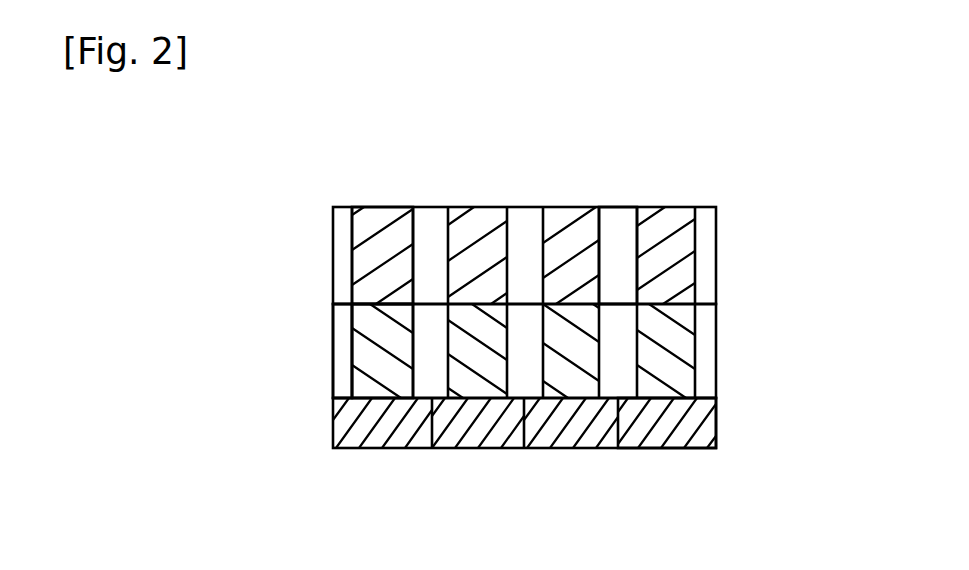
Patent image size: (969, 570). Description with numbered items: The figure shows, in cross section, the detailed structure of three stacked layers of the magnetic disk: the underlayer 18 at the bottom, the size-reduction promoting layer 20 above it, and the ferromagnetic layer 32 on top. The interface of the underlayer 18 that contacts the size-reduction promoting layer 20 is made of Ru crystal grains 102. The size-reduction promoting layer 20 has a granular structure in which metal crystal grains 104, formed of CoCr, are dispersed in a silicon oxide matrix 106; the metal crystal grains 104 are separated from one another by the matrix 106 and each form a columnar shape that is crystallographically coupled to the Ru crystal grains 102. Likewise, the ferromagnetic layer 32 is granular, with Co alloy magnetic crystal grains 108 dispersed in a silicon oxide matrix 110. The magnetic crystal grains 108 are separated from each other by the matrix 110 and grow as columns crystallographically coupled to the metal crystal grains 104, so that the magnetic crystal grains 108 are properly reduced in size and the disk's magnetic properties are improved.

The underlayer 18 is at (716, 425).
The size-reduction promoting layer 20 is at (716, 353).
The ferromagnetic layer 32 is at (716, 257).
The Ru crystal grains 102 is at (645, 442).
The metal crystal grains 104 is at (383, 365).
The matrix 106 is at (343, 328).
The magnetic crystal grains 108 is at (381, 212).
The matrix 110 is at (620, 218).